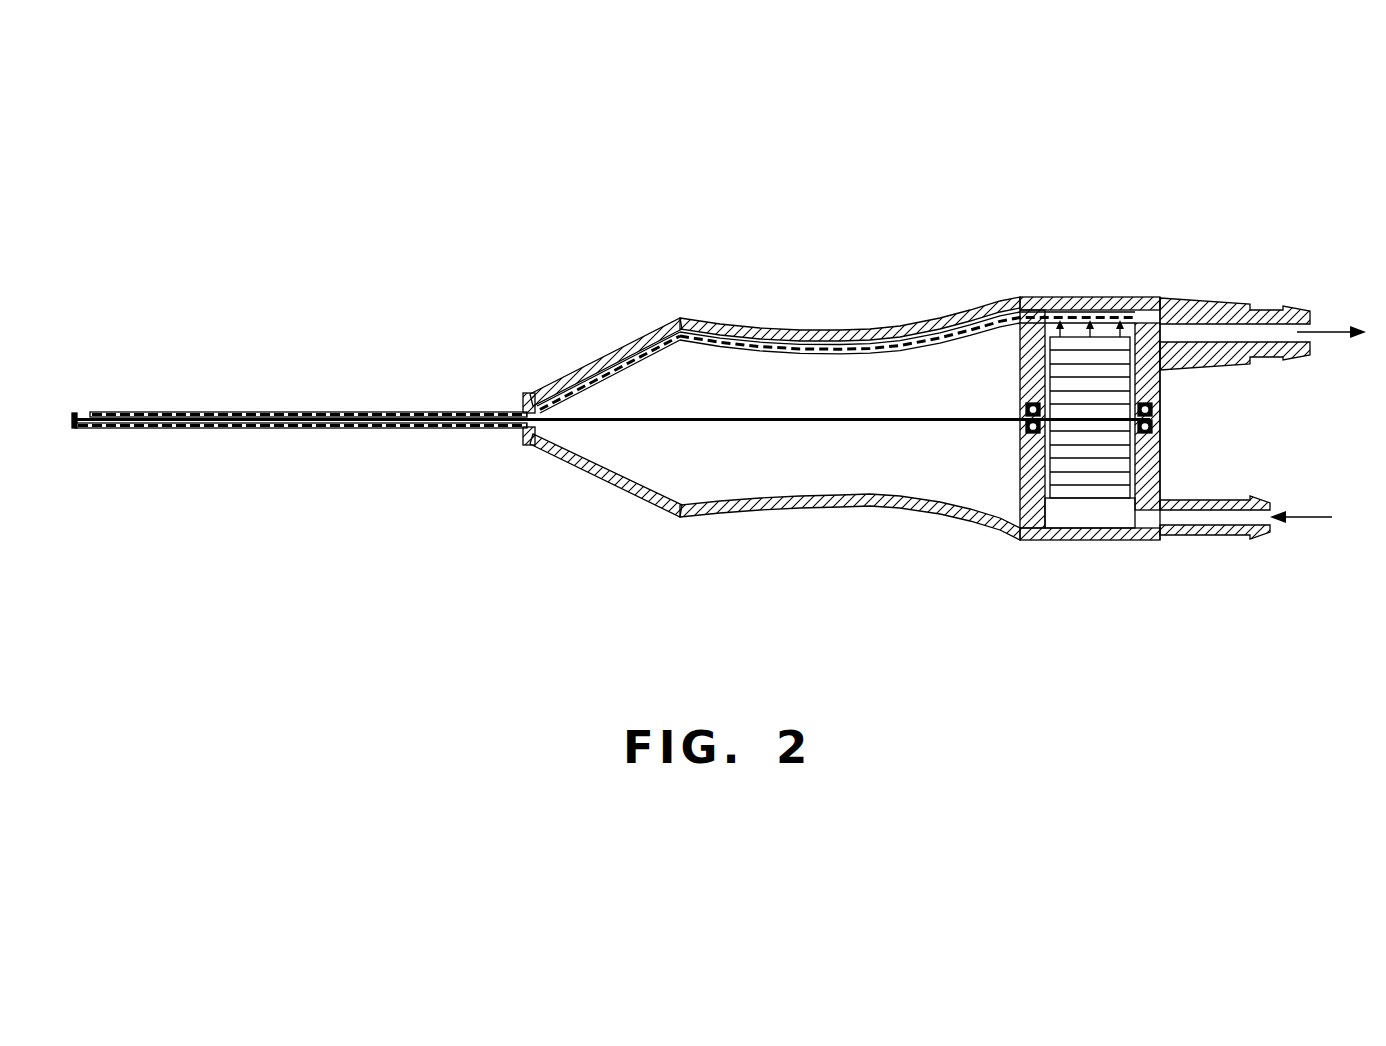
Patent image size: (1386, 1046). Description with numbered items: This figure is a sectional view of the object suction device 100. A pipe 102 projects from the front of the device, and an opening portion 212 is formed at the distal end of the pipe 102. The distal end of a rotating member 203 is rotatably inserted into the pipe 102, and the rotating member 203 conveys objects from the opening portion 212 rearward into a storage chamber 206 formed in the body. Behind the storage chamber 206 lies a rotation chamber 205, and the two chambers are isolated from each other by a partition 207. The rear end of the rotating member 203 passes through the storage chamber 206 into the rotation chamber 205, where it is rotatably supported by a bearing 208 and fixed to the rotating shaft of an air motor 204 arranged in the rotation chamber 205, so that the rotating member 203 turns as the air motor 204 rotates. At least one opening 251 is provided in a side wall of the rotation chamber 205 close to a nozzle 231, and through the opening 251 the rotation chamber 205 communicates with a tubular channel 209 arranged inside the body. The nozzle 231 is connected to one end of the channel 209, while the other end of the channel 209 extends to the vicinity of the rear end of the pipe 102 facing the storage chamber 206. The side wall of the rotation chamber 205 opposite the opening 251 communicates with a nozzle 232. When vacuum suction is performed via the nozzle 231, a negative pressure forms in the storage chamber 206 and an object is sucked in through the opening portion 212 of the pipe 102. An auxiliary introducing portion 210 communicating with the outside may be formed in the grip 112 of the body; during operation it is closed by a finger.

The object suction device 100 is at (861, 218).
The pipe 102 is at (348, 410).
The grip 112 is at (805, 328).
The rotating member 203 is at (723, 423).
The air motor 204 is at (1090, 486).
The rotation chamber 205 is at (1115, 516).
The storage chamber 206 is at (645, 466).
The partition 207 is at (1020, 364).
The bearing 208 is at (1033, 438).
The channel 209 is at (920, 344).
The auxiliary introducing portion 210 is at (803, 509).
The opening portion 212 is at (84, 410).
The nozzle 231 is at (1273, 322).
The nozzle 232 is at (1215, 521).
The opening 251 is at (1100, 310).